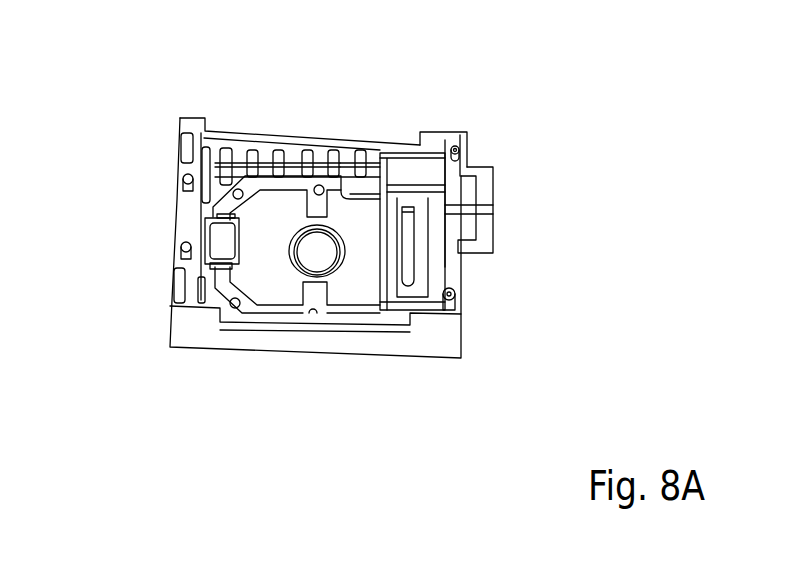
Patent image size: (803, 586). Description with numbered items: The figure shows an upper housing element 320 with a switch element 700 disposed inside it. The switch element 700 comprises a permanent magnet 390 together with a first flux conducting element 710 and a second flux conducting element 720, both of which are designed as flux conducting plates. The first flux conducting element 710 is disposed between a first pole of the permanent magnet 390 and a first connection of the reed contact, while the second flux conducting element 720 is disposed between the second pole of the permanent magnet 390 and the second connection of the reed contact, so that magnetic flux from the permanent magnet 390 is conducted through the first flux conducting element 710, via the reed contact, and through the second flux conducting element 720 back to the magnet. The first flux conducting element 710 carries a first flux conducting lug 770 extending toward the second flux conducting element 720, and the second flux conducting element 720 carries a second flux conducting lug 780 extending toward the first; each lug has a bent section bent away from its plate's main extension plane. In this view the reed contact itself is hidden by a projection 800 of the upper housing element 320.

The upper housing element 320 is at (170, 338).
The permanent magnet 390 is at (213, 238).
The switch element 700 is at (239, 173).
The first flux conducting element 710 is at (245, 310).
The second flux conducting element 720 is at (270, 178).
The first flux conducting lug 770 is at (290, 304).
The second flux conducting lug 780 is at (352, 172).
The projection 800 is at (420, 273).